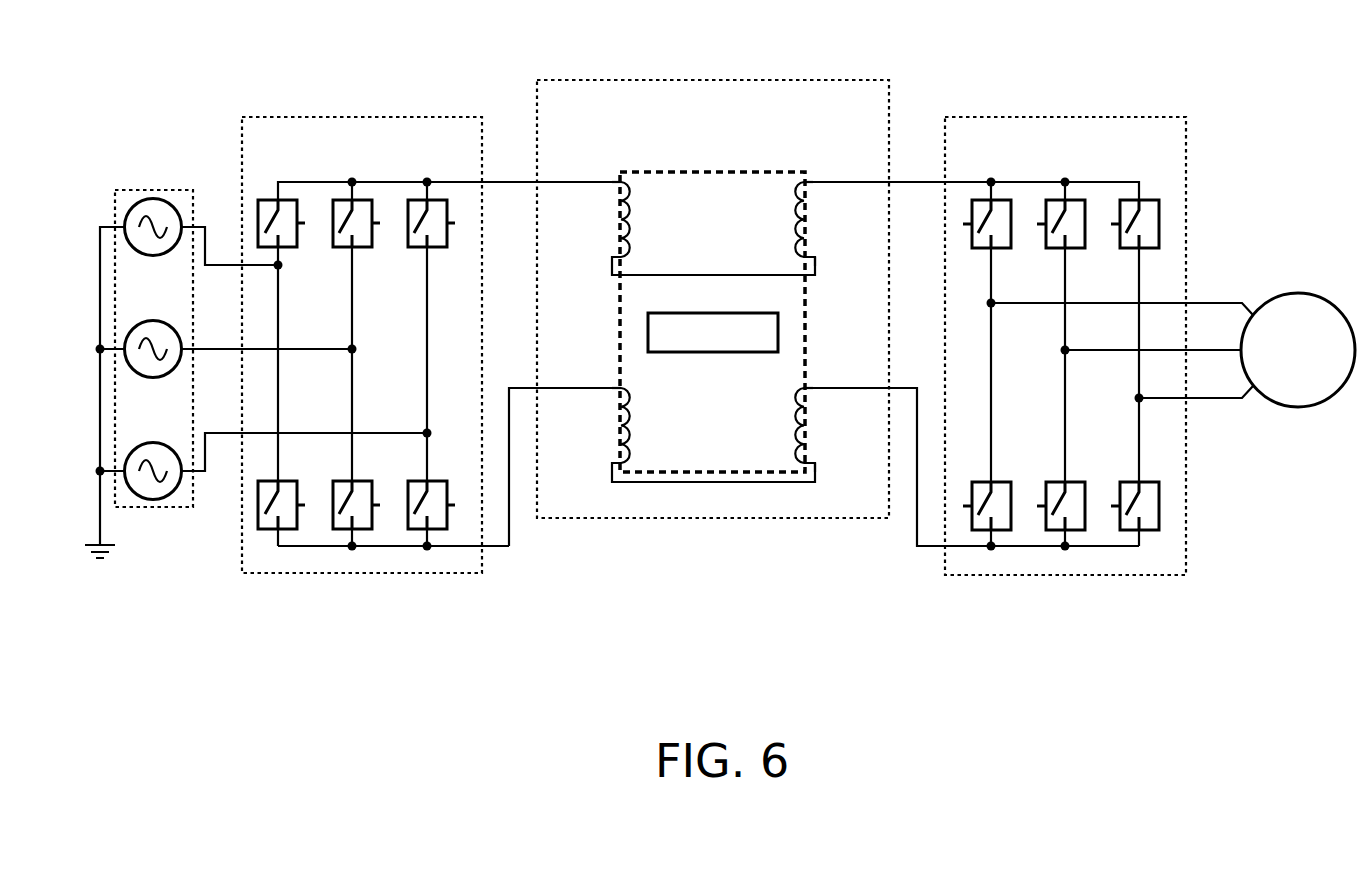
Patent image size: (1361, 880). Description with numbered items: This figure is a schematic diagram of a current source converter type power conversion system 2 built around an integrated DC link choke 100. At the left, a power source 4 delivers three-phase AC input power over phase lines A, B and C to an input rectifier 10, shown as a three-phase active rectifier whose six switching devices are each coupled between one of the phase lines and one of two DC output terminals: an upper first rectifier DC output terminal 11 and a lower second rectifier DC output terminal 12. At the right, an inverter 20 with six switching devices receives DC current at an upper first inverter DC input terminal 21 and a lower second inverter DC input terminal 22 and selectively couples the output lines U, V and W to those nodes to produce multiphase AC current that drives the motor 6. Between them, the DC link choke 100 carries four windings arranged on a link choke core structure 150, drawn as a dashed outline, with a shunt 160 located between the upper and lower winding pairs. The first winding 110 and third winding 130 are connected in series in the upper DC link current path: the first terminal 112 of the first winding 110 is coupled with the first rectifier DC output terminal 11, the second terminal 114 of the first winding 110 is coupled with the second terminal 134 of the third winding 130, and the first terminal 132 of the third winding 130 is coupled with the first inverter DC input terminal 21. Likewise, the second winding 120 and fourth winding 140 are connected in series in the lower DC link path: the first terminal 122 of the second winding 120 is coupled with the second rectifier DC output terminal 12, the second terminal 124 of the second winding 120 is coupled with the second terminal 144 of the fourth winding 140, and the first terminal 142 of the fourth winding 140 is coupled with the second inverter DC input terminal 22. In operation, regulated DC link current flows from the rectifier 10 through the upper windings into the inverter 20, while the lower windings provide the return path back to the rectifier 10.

The power conversion system 2 is at (148, 45).
The power source 4 is at (151, 190).
The motor 6 is at (1298, 293).
The rectifier 10 is at (360, 116).
The first rectifier DC output terminal 11 is at (525, 181).
The second rectifier DC output terminal 12 is at (527, 387).
The inverter 20 is at (1063, 116).
The first inverter DC input terminal 21 is at (900, 181).
The second inverter DC input terminal 22 is at (900, 387).
The DC link choke 100 is at (712, 78).
The first winding 110 is at (655, 212).
The first terminal of the first winding 112 is at (616, 181).
The second terminal of the first winding 114 is at (613, 256).
The second winding 120 is at (655, 418).
The first terminal of the second winding 122 is at (616, 387).
The second terminal of the second winding 124 is at (613, 462).
The third winding 130 is at (770, 226).
The first terminal of the third winding 132 is at (810, 181).
The second terminal of the third winding 134 is at (815, 256).
The fourth winding 140 is at (770, 433).
The first terminal of the fourth winding 142 is at (810, 387).
The second terminal of the fourth winding 144 is at (815, 462).
The link choke core structure 150 is at (694, 171).
The shunt 160 is at (711, 312).